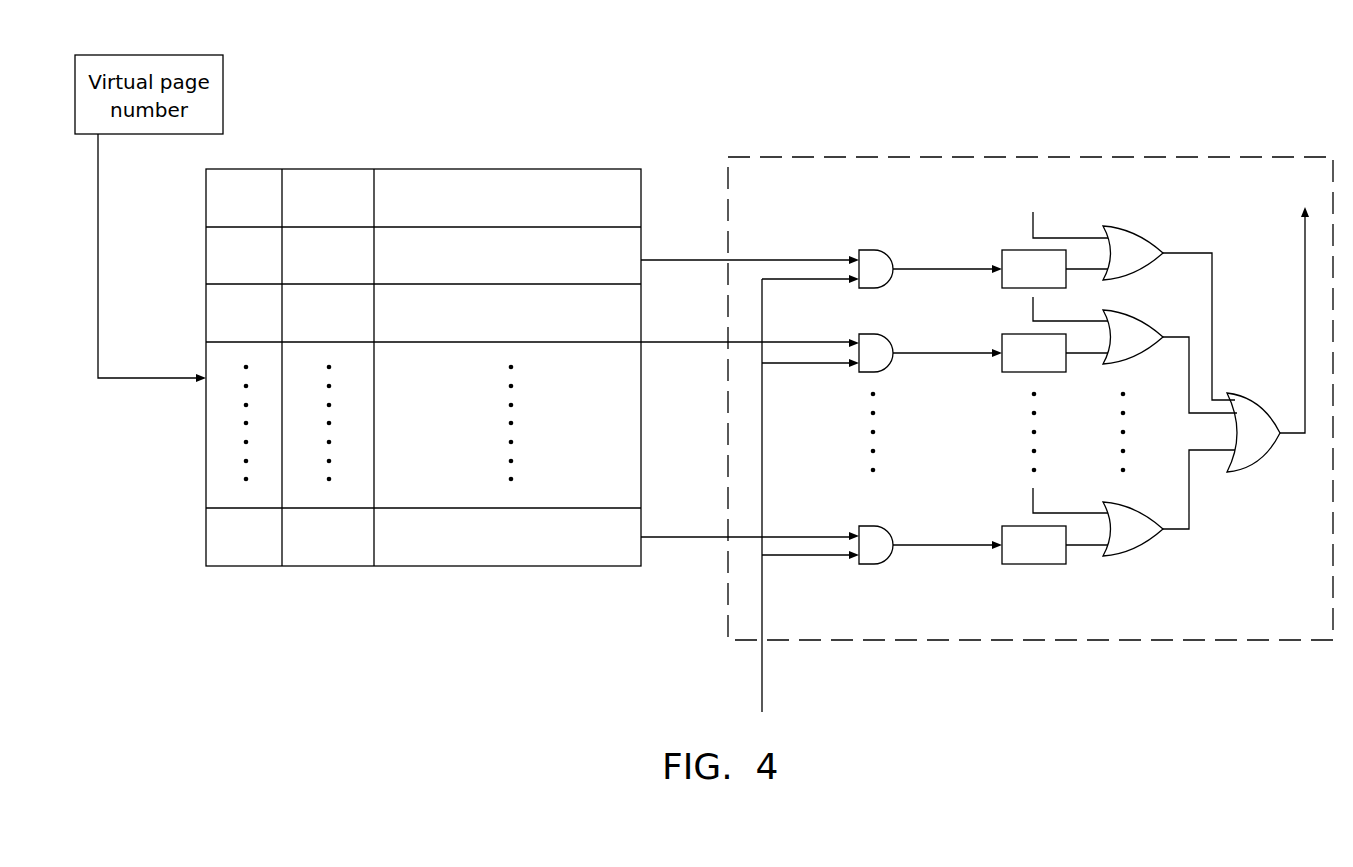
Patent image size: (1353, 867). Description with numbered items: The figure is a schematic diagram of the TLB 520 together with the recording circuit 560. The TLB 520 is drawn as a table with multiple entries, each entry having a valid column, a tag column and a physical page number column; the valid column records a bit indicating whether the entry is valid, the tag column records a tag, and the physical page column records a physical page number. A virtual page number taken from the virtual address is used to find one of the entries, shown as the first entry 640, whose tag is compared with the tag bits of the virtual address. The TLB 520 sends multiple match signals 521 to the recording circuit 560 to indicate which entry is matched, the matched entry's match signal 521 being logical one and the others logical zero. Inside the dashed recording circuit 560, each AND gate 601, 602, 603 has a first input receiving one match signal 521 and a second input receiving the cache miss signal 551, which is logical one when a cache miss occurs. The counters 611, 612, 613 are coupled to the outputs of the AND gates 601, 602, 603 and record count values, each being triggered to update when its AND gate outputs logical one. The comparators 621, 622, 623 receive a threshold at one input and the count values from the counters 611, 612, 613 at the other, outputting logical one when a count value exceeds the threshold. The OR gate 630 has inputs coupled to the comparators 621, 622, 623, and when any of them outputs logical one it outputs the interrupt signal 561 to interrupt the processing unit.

The TLB 520 is at (325, 168).
The match signals 521 is at (683, 259).
The cache miss signal 551 is at (762, 602).
The recording circuit 560 is at (921, 157).
The interrupt signal 561 is at (1305, 241).
The AND gate 601 is at (884, 250).
The AND gate 602 is at (866, 373).
The AND gate 603 is at (884, 526).
The counter 611 is at (1012, 290).
The counter 612 is at (1012, 374).
The counter 613 is at (1012, 525).
The comparator 621 is at (1127, 226).
The comparator 622 is at (1127, 310).
The comparator 623 is at (1125, 556).
The OR gate 630 is at (1256, 408).
The first entry 640 is at (206, 310).